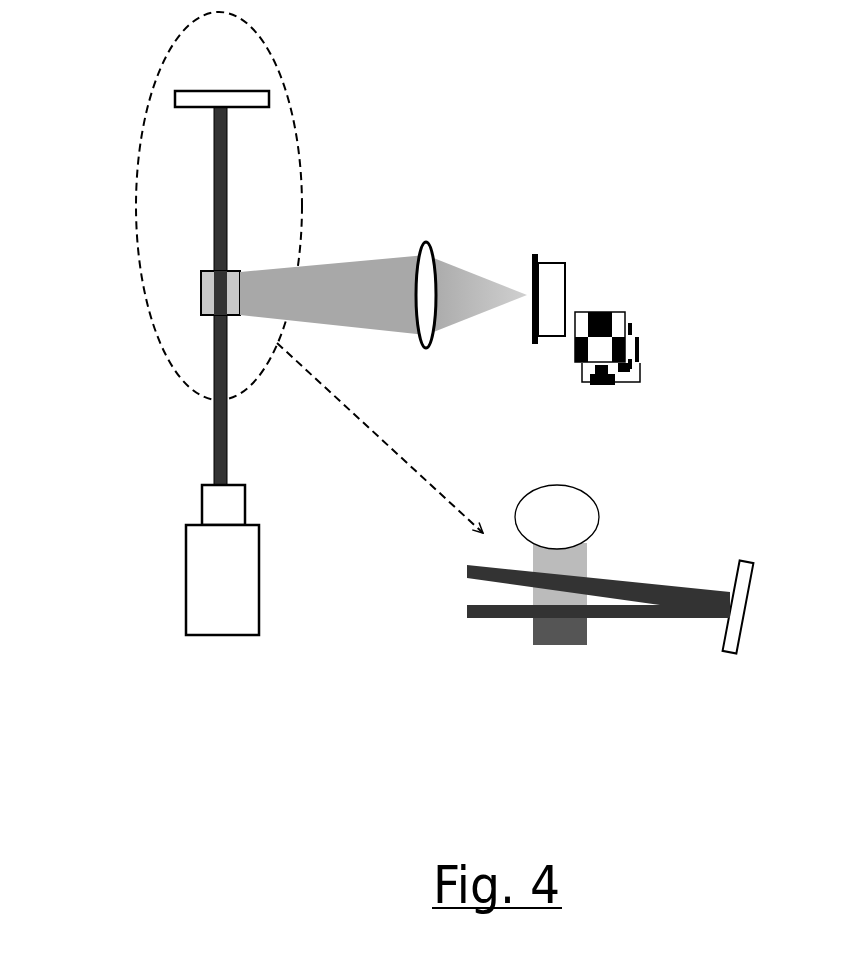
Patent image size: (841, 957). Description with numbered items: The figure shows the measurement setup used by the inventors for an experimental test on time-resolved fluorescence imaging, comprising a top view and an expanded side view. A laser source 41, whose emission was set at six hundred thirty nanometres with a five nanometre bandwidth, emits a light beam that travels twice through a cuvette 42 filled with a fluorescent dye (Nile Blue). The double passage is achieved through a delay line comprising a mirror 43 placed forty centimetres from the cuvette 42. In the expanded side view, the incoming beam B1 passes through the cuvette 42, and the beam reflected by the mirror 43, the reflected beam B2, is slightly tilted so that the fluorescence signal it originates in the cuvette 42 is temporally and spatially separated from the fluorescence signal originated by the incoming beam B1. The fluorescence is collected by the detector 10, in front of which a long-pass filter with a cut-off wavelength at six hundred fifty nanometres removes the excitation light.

The laser source 41 is at (168, 638).
The cuvette 42 is at (188, 298).
The mirror 43 is at (168, 118).
The detector 10 is at (555, 257).
The incoming beam B1 is at (622, 618).
The reflected beam B2 is at (648, 590).